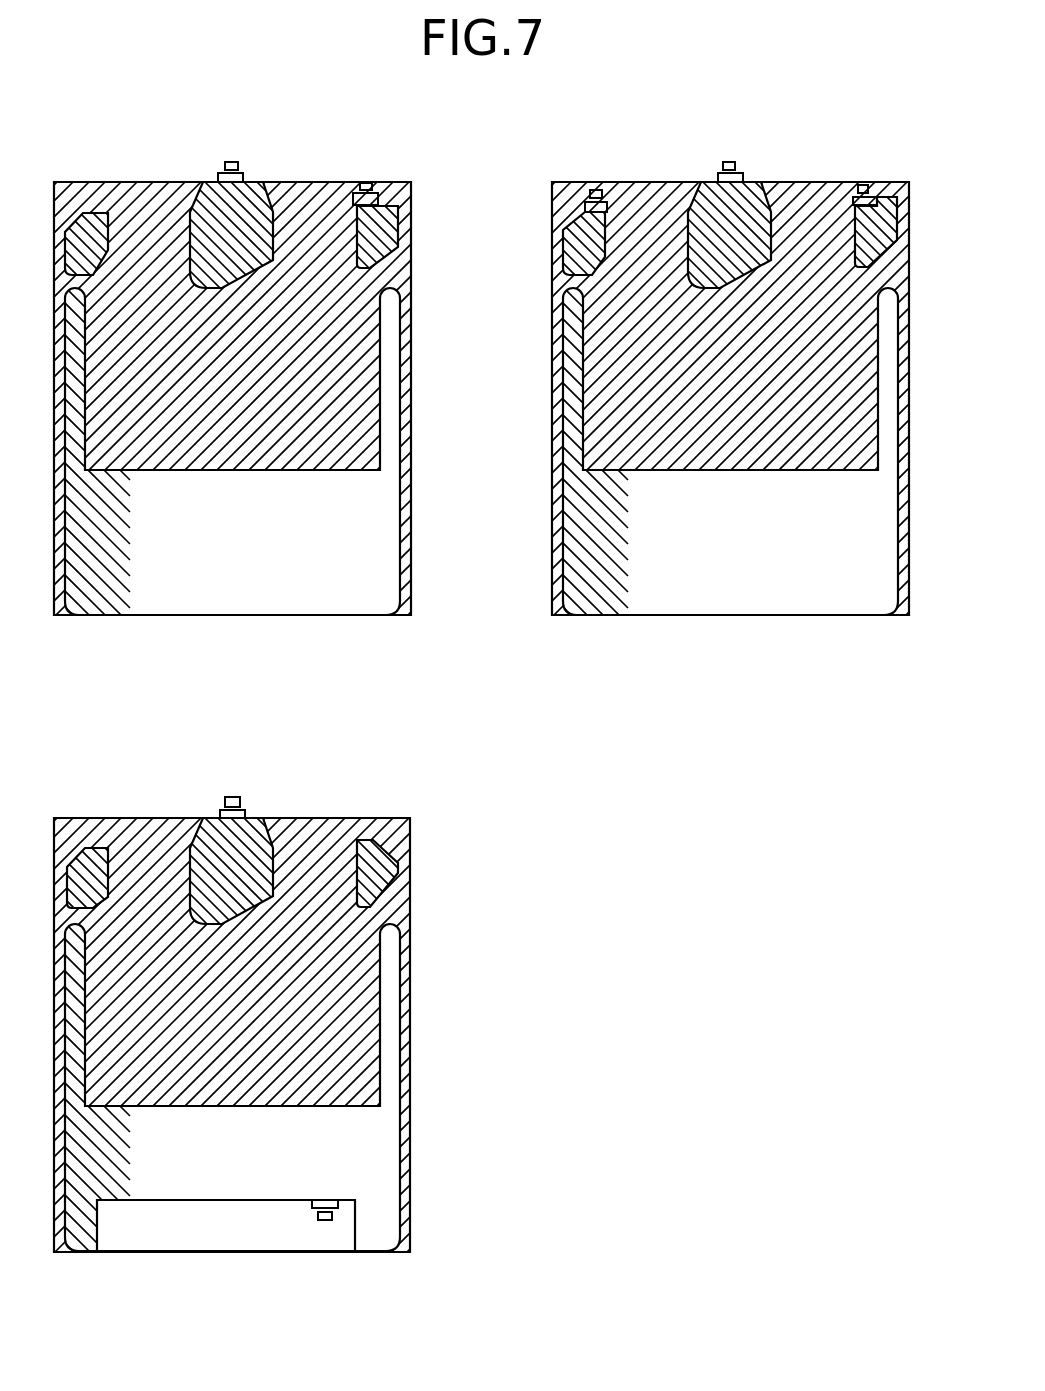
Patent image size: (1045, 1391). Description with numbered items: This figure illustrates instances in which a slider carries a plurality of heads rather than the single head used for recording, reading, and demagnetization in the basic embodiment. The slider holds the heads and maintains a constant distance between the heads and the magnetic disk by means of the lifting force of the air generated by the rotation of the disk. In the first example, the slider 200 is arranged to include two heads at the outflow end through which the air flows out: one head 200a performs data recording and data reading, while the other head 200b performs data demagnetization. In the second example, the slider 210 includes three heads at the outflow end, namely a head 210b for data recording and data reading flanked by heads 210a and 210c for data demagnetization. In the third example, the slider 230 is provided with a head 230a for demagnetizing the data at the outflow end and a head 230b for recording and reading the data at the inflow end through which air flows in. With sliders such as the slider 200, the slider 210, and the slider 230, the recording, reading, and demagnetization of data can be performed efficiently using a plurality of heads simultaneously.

The slider 200 is at (297, 183).
The head 200a is at (225, 166).
The head 200b is at (387, 187).
The slider 210 is at (310, 183).
The head 210a is at (625, 173).
The head 210b is at (734, 131).
The head 210c is at (884, 165).
The slider 230 is at (522, 1013).
The head 230a is at (257, 780).
The head 230b is at (408, 1214).